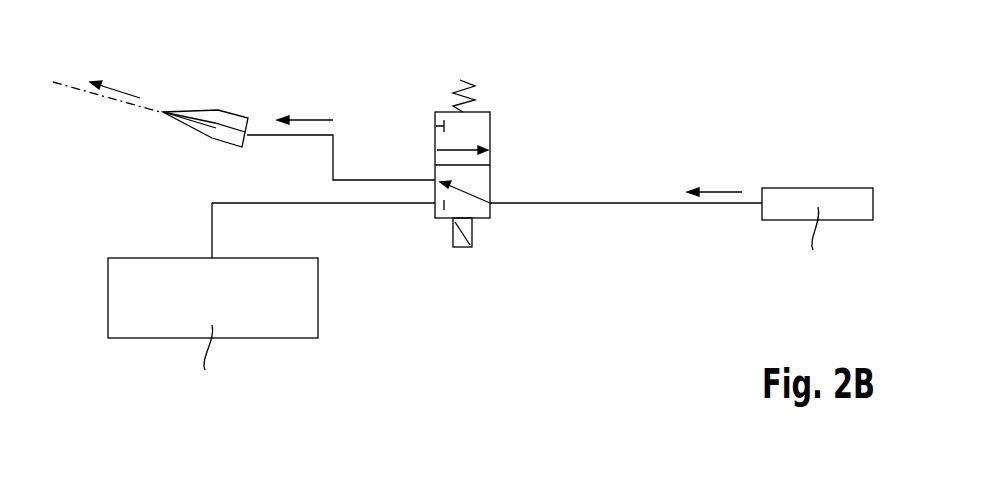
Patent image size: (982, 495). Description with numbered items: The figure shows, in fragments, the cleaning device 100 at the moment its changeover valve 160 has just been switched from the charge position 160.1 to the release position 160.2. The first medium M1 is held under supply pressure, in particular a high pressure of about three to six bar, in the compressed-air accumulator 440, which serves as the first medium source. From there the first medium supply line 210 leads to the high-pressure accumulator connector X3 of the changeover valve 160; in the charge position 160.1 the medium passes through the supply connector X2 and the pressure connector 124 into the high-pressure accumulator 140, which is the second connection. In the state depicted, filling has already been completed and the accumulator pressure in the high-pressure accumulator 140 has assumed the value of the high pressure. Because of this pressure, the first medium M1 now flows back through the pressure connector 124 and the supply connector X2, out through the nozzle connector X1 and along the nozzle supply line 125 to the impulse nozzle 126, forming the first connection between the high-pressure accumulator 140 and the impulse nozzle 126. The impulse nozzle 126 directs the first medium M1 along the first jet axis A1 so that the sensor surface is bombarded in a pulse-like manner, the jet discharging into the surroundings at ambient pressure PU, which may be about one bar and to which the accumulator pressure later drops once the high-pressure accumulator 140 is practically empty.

The cleaning device 100 is at (697, 66).
The impulse nozzle 126 is at (232, 110).
The ambient pressure PU is at (105, 105).
The first jet axis A1 is at (118, 102).
The first medium M1 is at (123, 90).
The nozzle supply line 125 is at (367, 178).
The changeover valve 160 is at (500, 98).
The charge position 160.1 is at (490, 133).
The release position 160.2 is at (490, 178).
The nozzle connector X1 is at (435, 180).
The supply connector X2 is at (490, 207).
The high-pressure accumulator connector X3 is at (435, 207).
The pressure connector 124 is at (650, 202).
The high-pressure accumulator 140 is at (810, 188).
The first medium supply line 210 is at (212, 229).
The compressed-air accumulator 440 is at (320, 297).